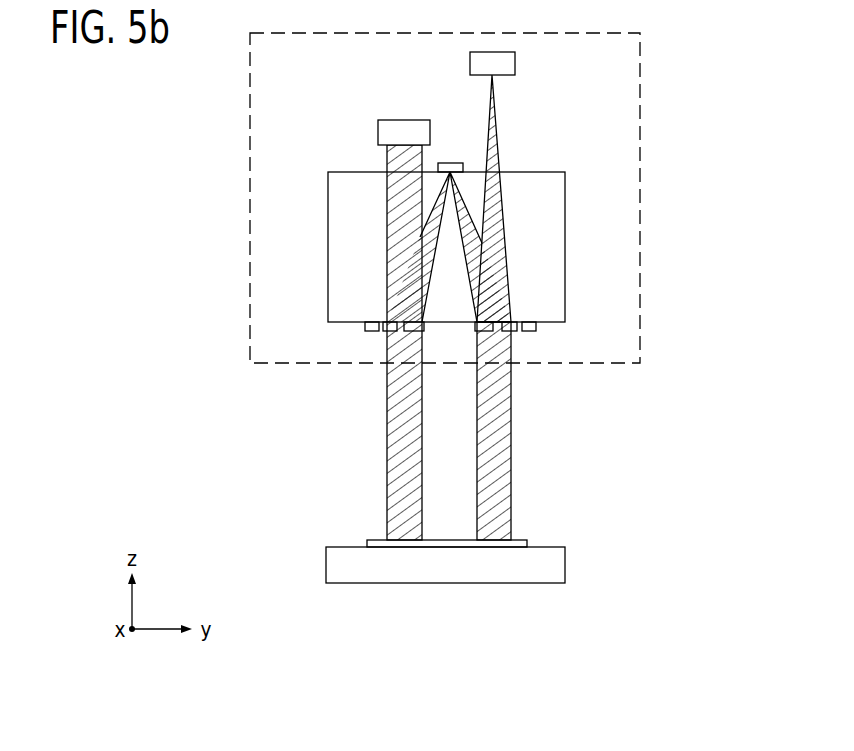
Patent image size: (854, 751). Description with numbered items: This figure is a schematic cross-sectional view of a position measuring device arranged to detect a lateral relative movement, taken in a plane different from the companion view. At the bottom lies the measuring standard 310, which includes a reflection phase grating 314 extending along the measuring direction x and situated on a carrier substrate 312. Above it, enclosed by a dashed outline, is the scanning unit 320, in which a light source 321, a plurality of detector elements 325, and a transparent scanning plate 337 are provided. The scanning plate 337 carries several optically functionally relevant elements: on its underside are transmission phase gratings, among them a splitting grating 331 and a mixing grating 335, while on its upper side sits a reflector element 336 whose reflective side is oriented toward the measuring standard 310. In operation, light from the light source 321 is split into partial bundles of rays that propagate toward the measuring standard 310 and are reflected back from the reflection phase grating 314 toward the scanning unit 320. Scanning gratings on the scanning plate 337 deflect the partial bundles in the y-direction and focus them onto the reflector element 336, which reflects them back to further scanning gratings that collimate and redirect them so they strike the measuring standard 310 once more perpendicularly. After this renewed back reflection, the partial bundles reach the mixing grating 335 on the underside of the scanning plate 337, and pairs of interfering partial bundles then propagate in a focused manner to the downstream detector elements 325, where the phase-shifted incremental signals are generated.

The measuring standard 310 is at (443, 499).
The carrier substrate 312 is at (528, 572).
The reflection phase grating 314 is at (520, 540).
The scanning unit 320 is at (660, 109).
The light source 321 is at (378, 133).
The detector elements 325 is at (503, 62).
The splitting grating 331 is at (372, 332).
The mixing grating 335 is at (528, 332).
The reflector element 336 is at (455, 163).
The scanning plate 337 is at (547, 234).